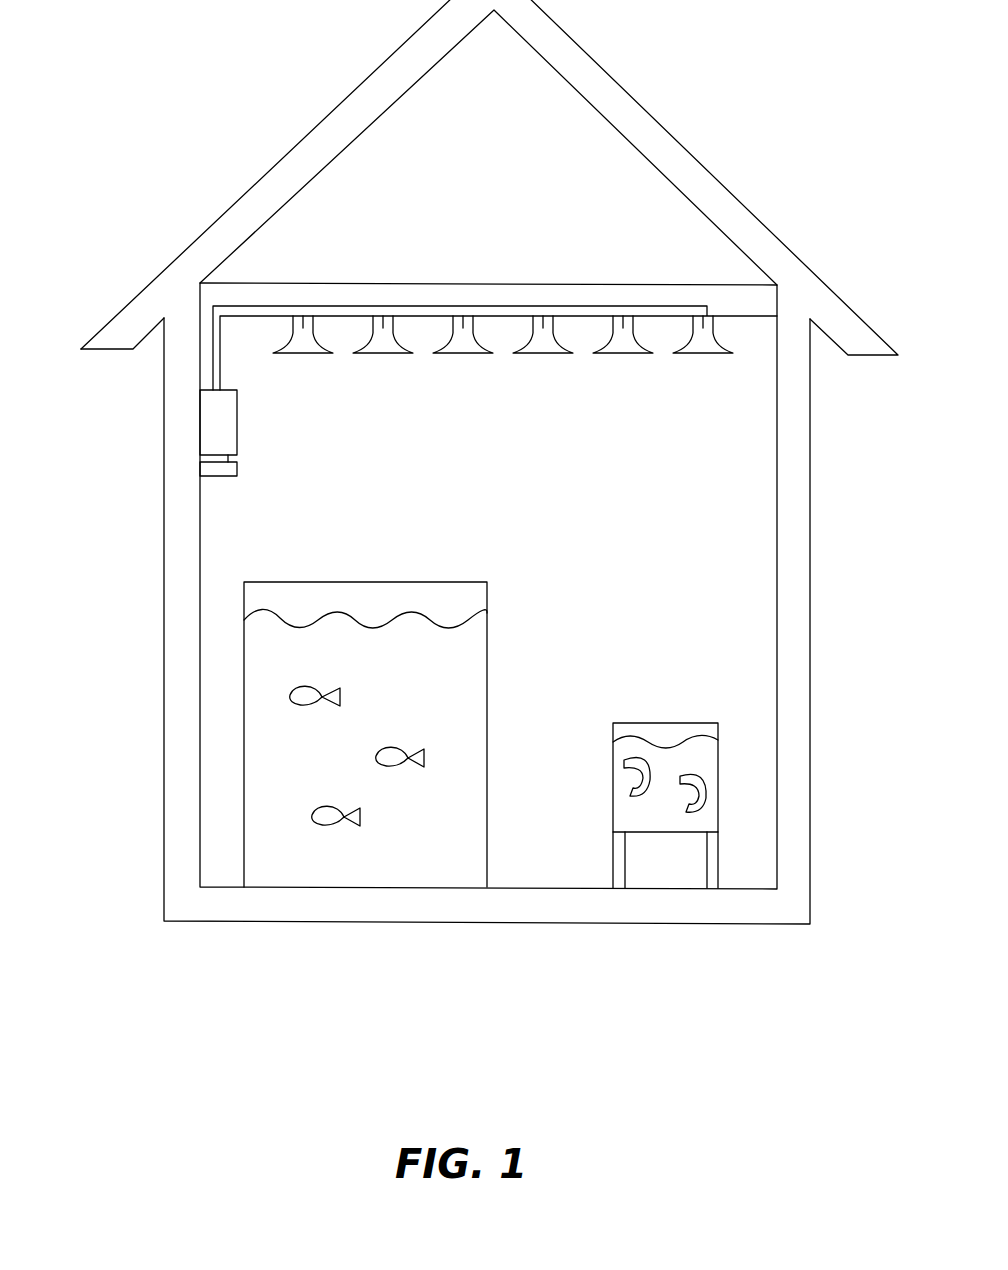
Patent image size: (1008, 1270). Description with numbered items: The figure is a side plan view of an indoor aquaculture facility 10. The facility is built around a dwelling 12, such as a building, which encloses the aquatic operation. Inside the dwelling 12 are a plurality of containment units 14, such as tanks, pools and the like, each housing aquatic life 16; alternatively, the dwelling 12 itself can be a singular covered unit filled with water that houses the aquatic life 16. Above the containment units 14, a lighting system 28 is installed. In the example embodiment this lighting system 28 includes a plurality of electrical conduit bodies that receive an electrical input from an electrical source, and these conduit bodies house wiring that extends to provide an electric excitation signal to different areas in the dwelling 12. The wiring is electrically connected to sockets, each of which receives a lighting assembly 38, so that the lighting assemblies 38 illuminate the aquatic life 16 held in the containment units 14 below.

The indoor aquaculture facility 10 is at (99, 160).
The dwelling 12 is at (164, 622).
The lighting system 28 is at (520, 192).
The lighting assembly 38 is at (290, 355).
The containment unit 14 is at (491, 640).
The aquatic life 16 is at (322, 690).